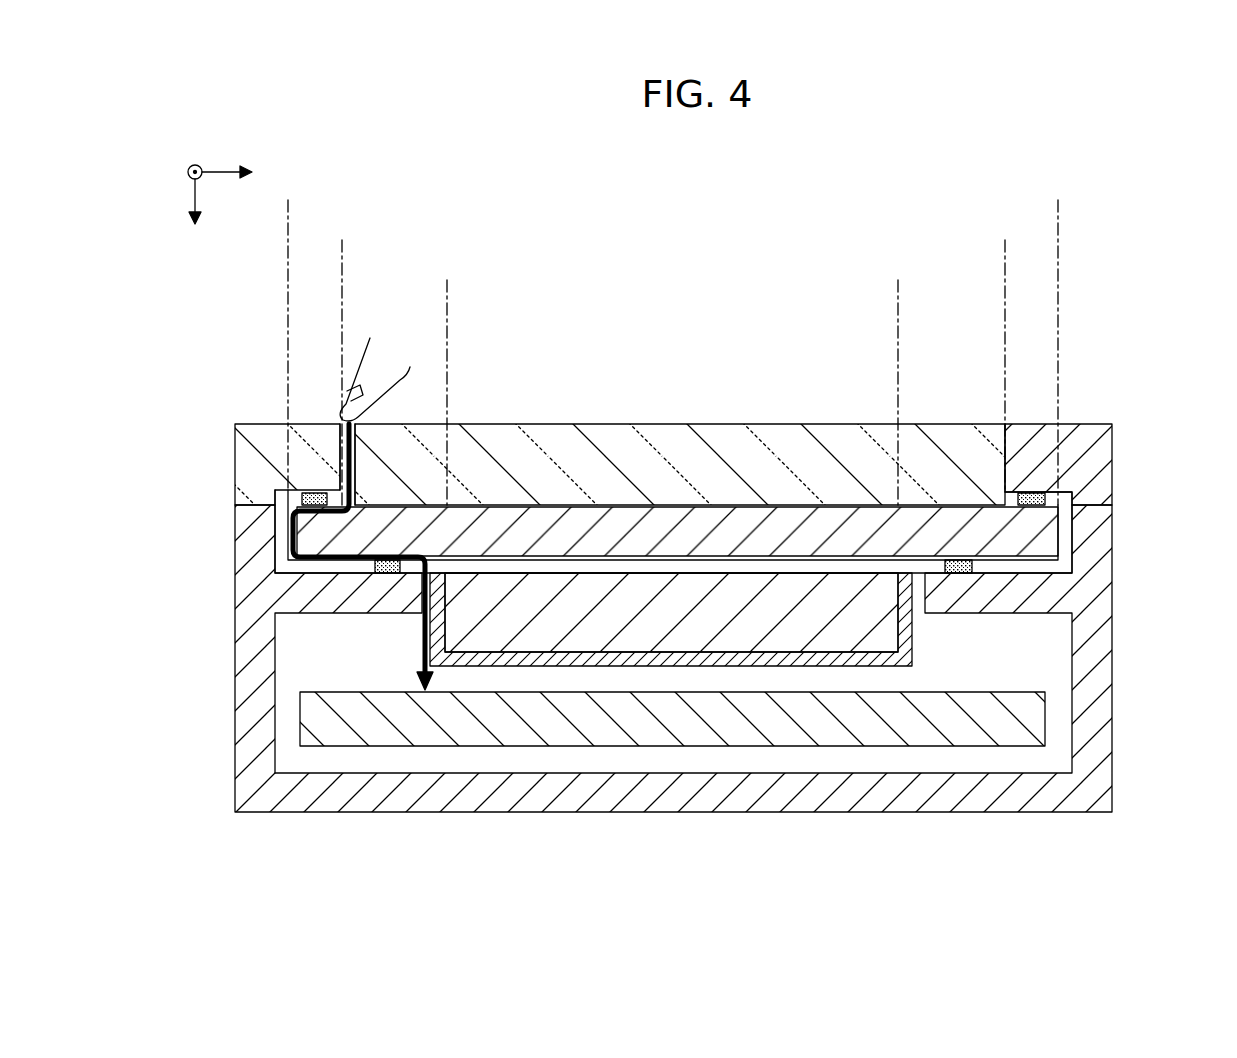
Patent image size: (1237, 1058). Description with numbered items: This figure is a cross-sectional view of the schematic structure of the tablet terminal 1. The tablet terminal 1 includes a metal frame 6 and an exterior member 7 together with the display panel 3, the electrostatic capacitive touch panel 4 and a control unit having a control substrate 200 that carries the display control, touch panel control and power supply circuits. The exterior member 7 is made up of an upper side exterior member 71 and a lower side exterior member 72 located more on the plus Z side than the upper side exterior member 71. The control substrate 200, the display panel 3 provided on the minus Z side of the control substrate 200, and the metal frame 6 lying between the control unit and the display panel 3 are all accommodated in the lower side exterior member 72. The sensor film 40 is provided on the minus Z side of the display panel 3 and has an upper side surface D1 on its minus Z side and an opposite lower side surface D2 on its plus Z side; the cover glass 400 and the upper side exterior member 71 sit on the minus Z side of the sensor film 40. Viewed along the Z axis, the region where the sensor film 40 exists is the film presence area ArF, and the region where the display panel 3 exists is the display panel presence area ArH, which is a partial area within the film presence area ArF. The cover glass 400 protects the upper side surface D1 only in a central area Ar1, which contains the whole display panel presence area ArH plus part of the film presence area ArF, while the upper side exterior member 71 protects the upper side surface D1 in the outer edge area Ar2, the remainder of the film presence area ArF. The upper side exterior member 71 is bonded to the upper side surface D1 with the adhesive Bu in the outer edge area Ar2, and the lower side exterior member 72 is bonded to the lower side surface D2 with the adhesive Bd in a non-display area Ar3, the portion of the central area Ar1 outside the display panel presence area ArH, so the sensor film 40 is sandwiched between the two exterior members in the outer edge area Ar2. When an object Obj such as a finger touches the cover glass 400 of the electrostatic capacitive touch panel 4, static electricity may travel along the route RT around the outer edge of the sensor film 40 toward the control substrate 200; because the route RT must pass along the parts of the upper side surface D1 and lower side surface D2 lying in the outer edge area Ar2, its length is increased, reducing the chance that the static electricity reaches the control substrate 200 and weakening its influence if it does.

The tablet terminal 1 is at (1172, 212).
The display panel 3 is at (648, 627).
The electrostatic capacitive touch panel 4 is at (600, 382).
The sensor film 40 is at (611, 522).
The cover glass 400 is at (667, 460).
The metal frame 6 is at (724, 657).
The exterior member 7 is at (1090, 382).
The upper side exterior member 71 is at (1083, 465).
The lower side exterior member 72 is at (1097, 600).
The control substrate 200 is at (805, 723).
The adhesive Bd is at (962, 575).
The adhesive Bu is at (1032, 506).
The upper side surface D1 is at (507, 505).
The lower side surface D2 is at (756, 572).
The route RT is at (422, 653).
The object Obj is at (360, 352).
The film presence area ArF is at (288, 212).
The central area Ar1 is at (342, 252).
The outer edge area Ar2 is at (288, 252).
The non-display area Ar3 is at (342, 292).
The display panel presence area ArH is at (447, 292).